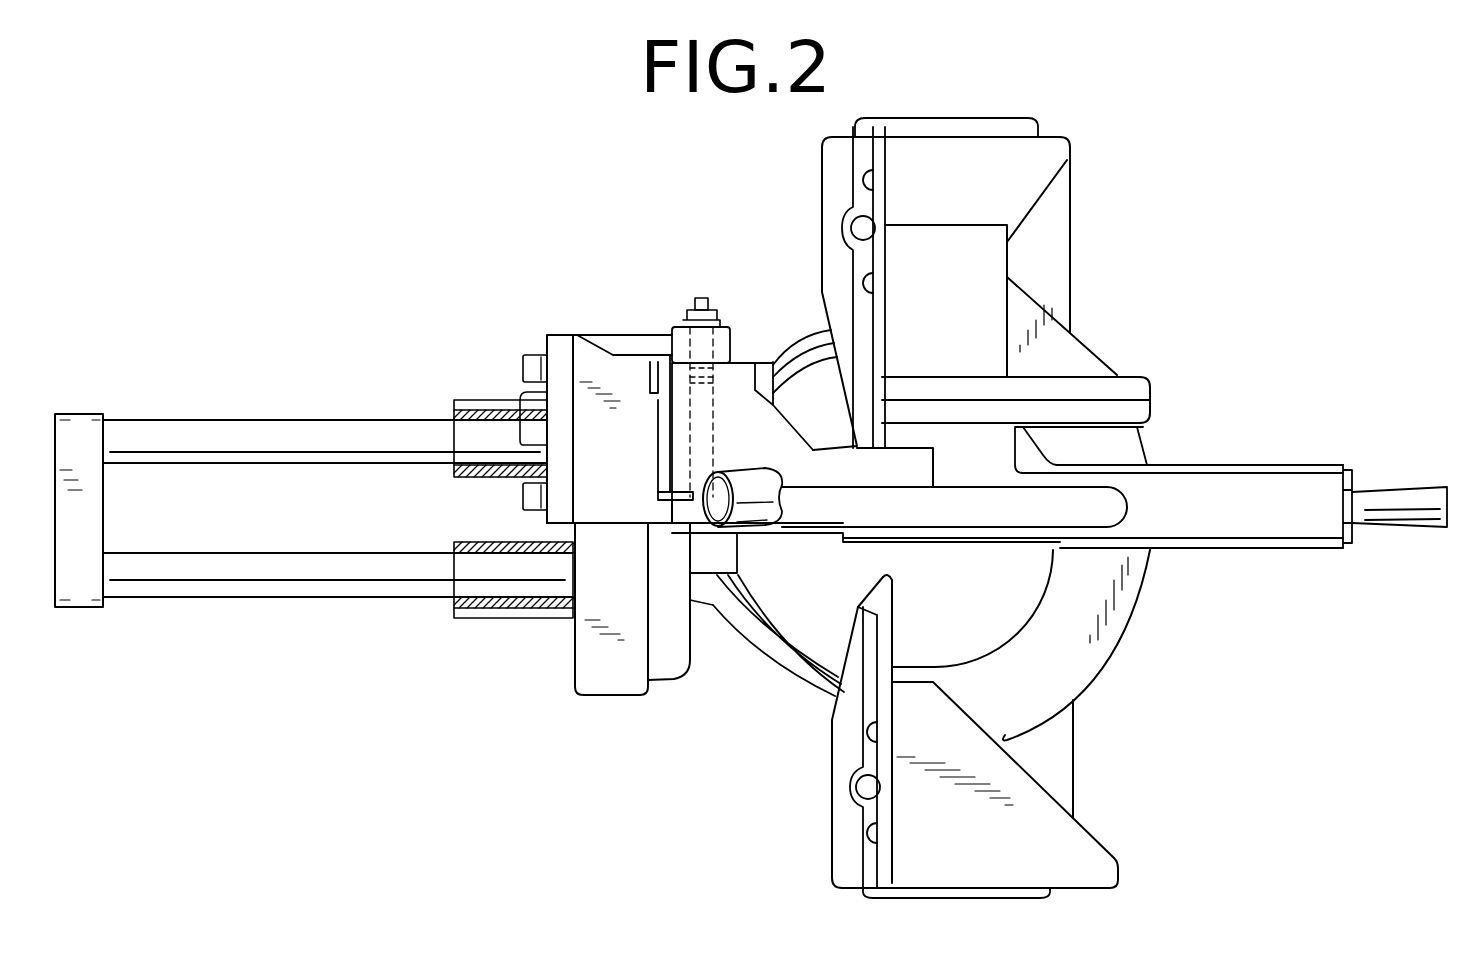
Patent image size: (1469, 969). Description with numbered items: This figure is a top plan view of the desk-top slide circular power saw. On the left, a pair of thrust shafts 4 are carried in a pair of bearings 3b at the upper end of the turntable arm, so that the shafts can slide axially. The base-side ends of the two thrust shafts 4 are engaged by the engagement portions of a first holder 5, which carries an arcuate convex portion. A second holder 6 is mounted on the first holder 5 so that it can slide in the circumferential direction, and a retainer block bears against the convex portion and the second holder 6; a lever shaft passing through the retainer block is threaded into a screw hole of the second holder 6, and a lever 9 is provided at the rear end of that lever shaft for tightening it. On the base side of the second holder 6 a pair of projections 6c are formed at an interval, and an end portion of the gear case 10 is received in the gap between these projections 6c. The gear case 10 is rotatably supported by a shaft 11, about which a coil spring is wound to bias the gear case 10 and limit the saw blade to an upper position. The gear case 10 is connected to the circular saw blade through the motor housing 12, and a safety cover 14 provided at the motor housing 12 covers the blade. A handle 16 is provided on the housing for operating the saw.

The thrust shaft 4 is at (188, 437).
The bearing 3b is at (470, 398).
The lever 9 is at (527, 395).
The second holder 6 is at (588, 357).
The projection 6c is at (657, 338).
The first holder 5 is at (621, 698).
The shaft 11 is at (703, 297).
The gear case 10 is at (738, 375).
The motor housing 12 is at (990, 265).
The handle 16 is at (1130, 388).
The safety cover 14 is at (1058, 512).